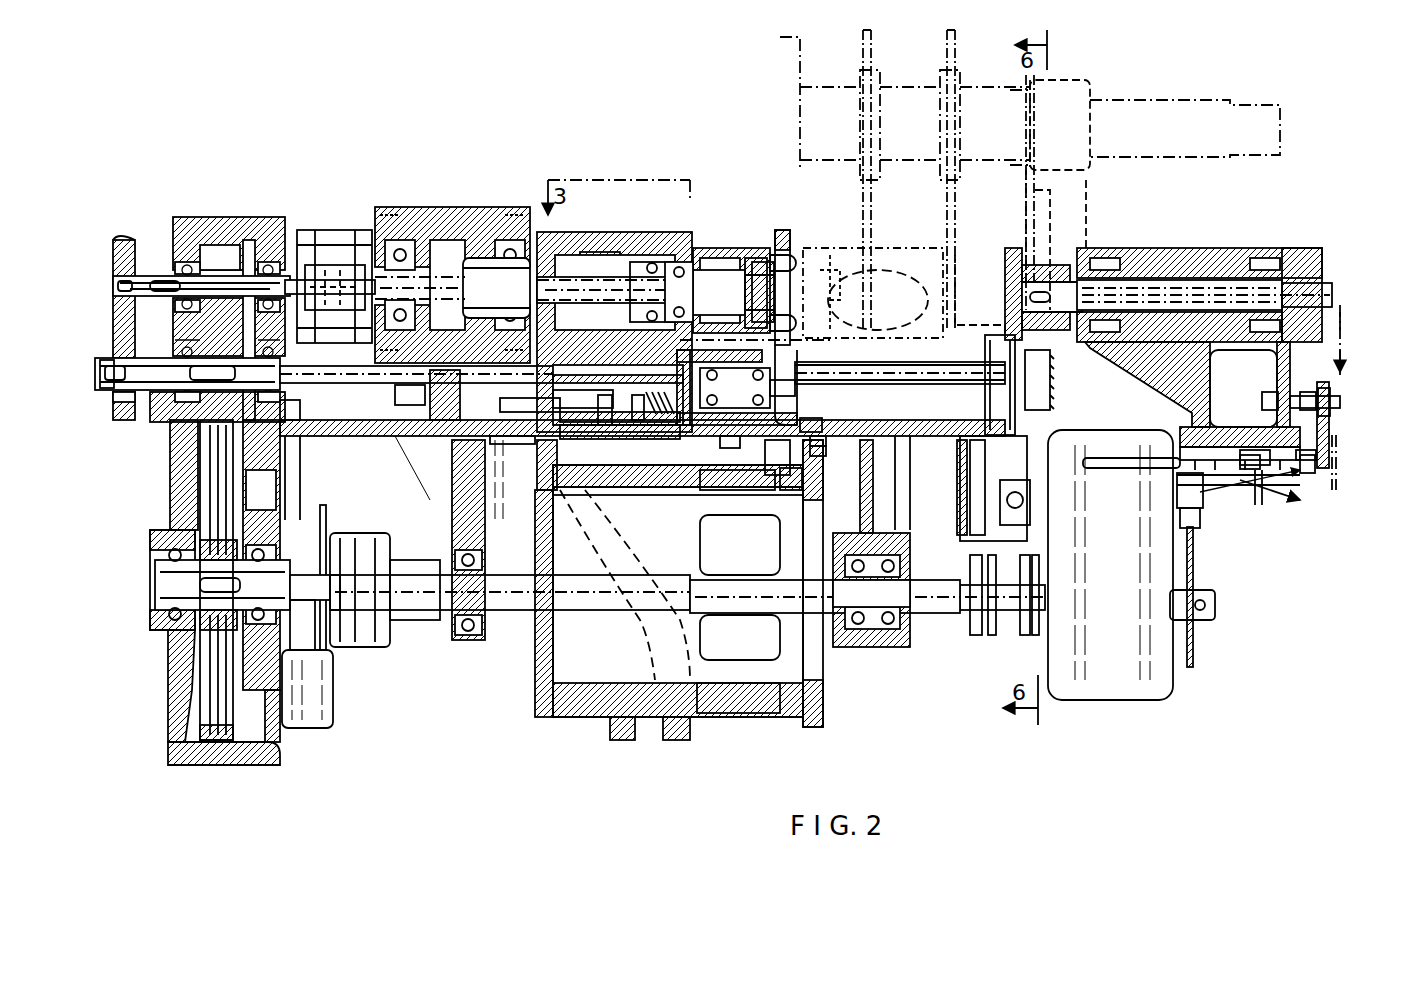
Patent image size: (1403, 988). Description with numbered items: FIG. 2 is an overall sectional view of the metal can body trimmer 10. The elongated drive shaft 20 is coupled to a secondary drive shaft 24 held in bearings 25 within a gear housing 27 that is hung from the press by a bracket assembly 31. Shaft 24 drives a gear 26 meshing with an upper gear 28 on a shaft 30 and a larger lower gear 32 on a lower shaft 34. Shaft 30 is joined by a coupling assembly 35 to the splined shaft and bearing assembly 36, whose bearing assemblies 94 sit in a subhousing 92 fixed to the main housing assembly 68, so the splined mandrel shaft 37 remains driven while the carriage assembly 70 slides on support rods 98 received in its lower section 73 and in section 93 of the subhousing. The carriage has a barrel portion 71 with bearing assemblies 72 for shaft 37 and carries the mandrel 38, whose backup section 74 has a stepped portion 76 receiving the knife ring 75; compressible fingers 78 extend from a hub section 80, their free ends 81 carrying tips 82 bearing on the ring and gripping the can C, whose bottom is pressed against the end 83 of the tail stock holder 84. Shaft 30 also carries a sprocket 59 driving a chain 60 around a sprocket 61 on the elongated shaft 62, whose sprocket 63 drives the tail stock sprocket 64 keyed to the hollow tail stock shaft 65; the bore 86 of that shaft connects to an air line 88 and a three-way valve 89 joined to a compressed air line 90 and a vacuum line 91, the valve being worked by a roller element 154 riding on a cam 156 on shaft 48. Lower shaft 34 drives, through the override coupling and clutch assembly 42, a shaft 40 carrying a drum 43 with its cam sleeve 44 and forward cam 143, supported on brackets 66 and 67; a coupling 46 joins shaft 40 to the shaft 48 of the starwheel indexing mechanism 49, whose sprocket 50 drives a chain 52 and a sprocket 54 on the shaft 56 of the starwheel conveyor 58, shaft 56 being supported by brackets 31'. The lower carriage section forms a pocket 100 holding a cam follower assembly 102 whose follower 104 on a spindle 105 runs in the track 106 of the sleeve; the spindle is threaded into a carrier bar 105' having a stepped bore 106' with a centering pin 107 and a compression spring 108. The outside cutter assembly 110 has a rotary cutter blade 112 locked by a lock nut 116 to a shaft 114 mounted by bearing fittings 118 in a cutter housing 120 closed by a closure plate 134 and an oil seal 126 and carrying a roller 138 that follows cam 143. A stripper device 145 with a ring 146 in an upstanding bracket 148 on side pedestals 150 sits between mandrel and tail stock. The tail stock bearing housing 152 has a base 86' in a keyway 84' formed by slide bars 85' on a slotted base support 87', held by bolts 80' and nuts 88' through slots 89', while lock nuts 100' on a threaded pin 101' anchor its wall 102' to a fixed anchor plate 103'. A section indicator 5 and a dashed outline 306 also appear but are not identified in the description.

The metal can body trimmer 10 is at (497, 680).
The elongated drive shaft 20 is at (122, 405).
The secondary drive shaft 24 is at (140, 405).
The bearings 25 is at (148, 396).
The gear 26 is at (283, 406).
The gear housing 27 is at (170, 466).
The upper gear 28 is at (250, 265).
The shaft 30 is at (205, 285).
The bracket assembly 31 is at (759, 338).
The brackets 31' is at (1111, 215).
The lower gear 32 is at (205, 700).
The lower shaft 34 is at (176, 584).
The coupling assembly 35 is at (338, 240).
The splined shaft and bearing assembly 36 is at (507, 300).
The splined mandrel shaft 37 is at (432, 265).
The can body receiving mandrel 38 is at (712, 248).
The shaft 40 is at (496, 607).
The override coupling and clutch assembly 42 is at (346, 662).
The drum element 43 is at (700, 714).
The cam sleeve 44 is at (560, 720).
The coupling 46 is at (996, 637).
The shaft 48 is at (1190, 642).
The starwheel conveyor indexing mechanism 49 is at (1138, 556).
The sprocket 50 is at (1012, 476).
The chain 52 is at (1026, 182).
The sprocket 54 is at (1040, 100).
The shaft 56 is at (1150, 105).
The starwheel conveyor 58 is at (958, 75).
The sprocket 59 is at (128, 262).
The chain 60 is at (120, 245).
The sprocket 61 is at (125, 425).
The elongated shaft 62 is at (160, 395).
The sprocket 63 is at (1052, 385).
The tail stock sprocket 64 is at (1052, 268).
The hollow tail stock shaft 65 is at (1220, 287).
The support bracket 66 is at (456, 540).
The support bracket 67 is at (892, 555).
The main housing assembly 68 is at (397, 478).
The laterally shiftable carriage assembly 70 is at (552, 240).
The top barrel-like portion 71 is at (590, 252).
The bearing assemblies 72 is at (606, 395).
The lower hollowed and skirted section 73 is at (652, 425).
The rotatable annular backup section 74 is at (692, 250).
The ringlike knife element 75 is at (754, 256).
The stepped portion 76 is at (742, 270).
The compressible fingers 78 is at (757, 262).
The central apertured hub section 80 is at (734, 292).
The threaded bolts 80' is at (1229, 488).
The free ends 81 is at (780, 250).
The tips 82 is at (756, 348).
The end 83 is at (1010, 337).
The tail stock holder 84 is at (991, 276).
The keyway 84' is at (1351, 462).
The slide bars 85' is at (1336, 477).
The elongated bore 86 is at (1202, 284).
The base 86' is at (1147, 384).
The slotted base support 87' is at (1282, 530).
The air line 88 is at (1316, 341).
The nuts 88' is at (1219, 504).
The three-way valve 89 is at (1162, 489).
The elongated slots 89' is at (1294, 486).
The compressed air line 90 is at (1270, 500).
The vacuum line 91 is at (1262, 505).
The subhousing 92 is at (475, 230).
The section 93 is at (400, 422).
The bearing assemblies 94 is at (410, 250).
The support rods 98 is at (380, 402).
The pocket 100 is at (591, 389).
The lock nuts 100' is at (1301, 389).
The threaded pin 101' is at (1355, 402).
The cam follower assembly 102 is at (512, 449).
The wall 102' is at (1277, 410).
The fixed anchor plate 103' is at (1315, 470).
The cam follower 104 is at (541, 496).
The spindle 105 is at (678, 489).
The carrier bar 105' is at (525, 465).
The track 106 is at (678, 616).
The stepped bore 106' is at (620, 437).
The spring biased centering pin 107 is at (579, 377).
The compression spring 108 is at (636, 392).
The outside cutter assembly 110 is at (772, 472).
The rotary cutter blade 112 is at (762, 456).
The shaft 114 is at (780, 380).
The lock nut 116 is at (800, 440).
The bearing assembly and fittings 118 is at (737, 434).
The cutter housing 120 is at (712, 490).
The oil seal 126 is at (738, 490).
The closure plate 134 is at (640, 395).
The roller 138 is at (880, 480).
The cam 143 is at (826, 692).
The can stripper device 145 is at (795, 252).
The circular ring 146 is at (792, 262).
The annular upstanding bracket 148 is at (820, 372).
The side pedestals 150 is at (826, 425).
The bearing assembly housing 152 is at (1192, 335).
The valve control roller element 154 is at (1190, 522).
The cam 156 is at (1195, 630).
The outline 306 is at (980, 295).
The can C is at (908, 232).
The cutter circle 5 is at (874, 292).